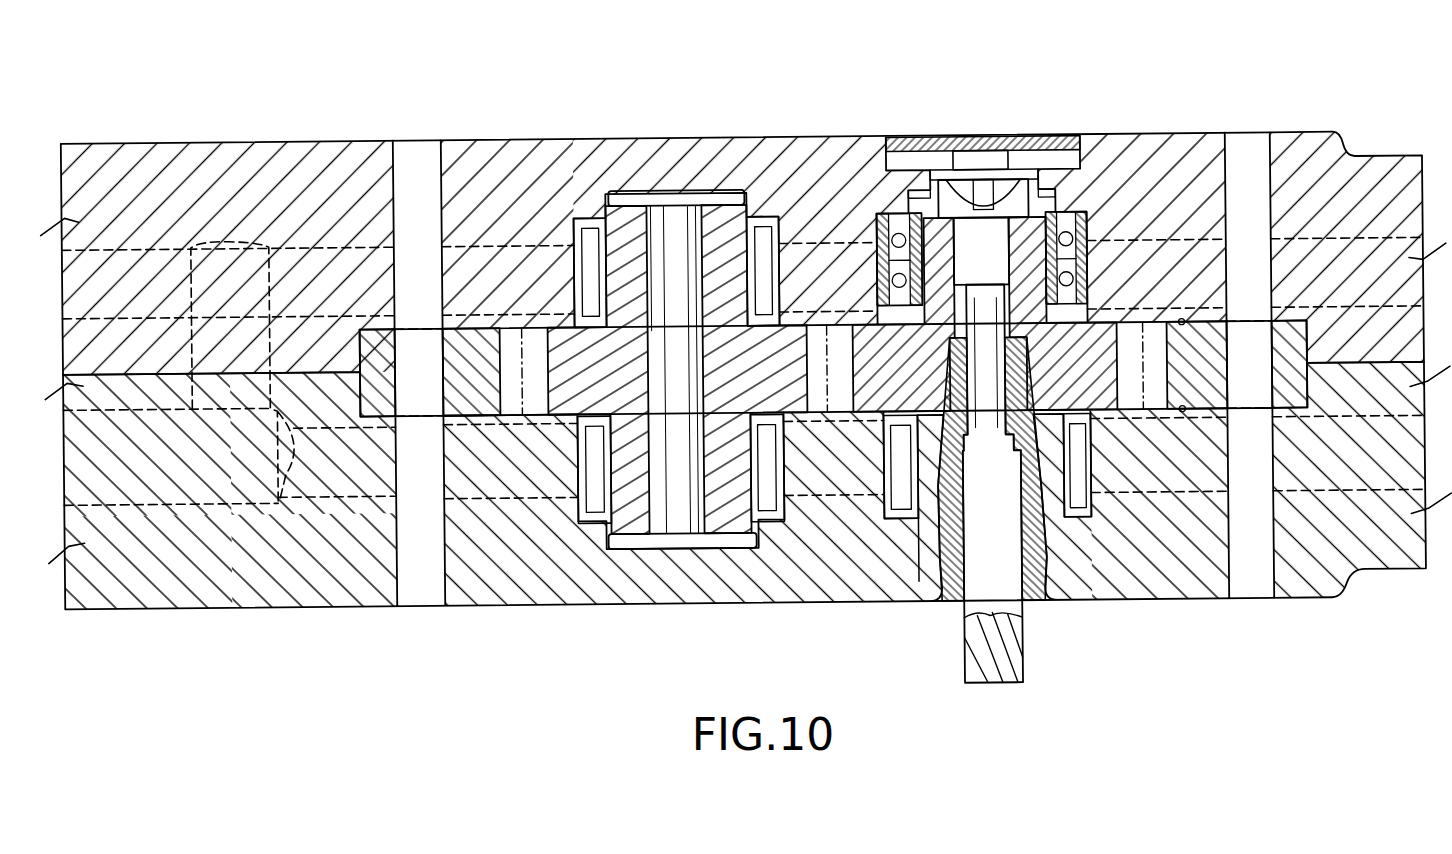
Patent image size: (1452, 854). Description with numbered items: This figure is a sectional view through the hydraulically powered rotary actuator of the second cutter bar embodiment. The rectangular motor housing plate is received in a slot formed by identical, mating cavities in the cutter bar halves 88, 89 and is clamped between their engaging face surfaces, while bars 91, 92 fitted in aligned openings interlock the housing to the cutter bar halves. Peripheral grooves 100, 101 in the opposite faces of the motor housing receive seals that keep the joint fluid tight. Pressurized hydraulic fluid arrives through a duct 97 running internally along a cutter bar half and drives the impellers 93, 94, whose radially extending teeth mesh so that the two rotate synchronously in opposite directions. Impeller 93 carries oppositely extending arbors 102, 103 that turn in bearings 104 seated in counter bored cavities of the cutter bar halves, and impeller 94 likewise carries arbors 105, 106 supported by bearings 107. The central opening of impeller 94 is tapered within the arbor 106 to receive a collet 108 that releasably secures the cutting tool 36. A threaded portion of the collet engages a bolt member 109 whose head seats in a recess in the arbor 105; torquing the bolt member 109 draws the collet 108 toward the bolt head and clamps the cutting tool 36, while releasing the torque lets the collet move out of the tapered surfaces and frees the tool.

The cutting tool 36 is at (973, 575).
The cutter bar half 88 is at (1320, 138).
The cutter bar half 89 is at (1315, 602).
The bar 91 is at (407, 150).
The bar 92 is at (1248, 142).
The impeller 93 is at (708, 198).
The impeller 94 is at (1057, 203).
The duct 97 is at (302, 246).
The peripheral groove 100 is at (483, 415).
The peripheral groove 101 is at (482, 328).
The arbor 102 is at (597, 210).
The arbor 103 is at (597, 507).
The bearing 104 is at (773, 247).
The arbor 105 is at (1080, 207).
The arbor 106 is at (1095, 497).
The bearing 107 is at (883, 217).
The collet 108 is at (1040, 590).
The bolt member 109 is at (883, 512).